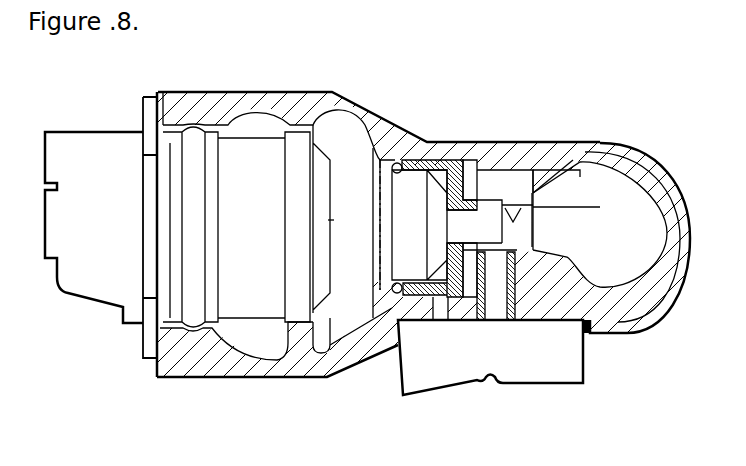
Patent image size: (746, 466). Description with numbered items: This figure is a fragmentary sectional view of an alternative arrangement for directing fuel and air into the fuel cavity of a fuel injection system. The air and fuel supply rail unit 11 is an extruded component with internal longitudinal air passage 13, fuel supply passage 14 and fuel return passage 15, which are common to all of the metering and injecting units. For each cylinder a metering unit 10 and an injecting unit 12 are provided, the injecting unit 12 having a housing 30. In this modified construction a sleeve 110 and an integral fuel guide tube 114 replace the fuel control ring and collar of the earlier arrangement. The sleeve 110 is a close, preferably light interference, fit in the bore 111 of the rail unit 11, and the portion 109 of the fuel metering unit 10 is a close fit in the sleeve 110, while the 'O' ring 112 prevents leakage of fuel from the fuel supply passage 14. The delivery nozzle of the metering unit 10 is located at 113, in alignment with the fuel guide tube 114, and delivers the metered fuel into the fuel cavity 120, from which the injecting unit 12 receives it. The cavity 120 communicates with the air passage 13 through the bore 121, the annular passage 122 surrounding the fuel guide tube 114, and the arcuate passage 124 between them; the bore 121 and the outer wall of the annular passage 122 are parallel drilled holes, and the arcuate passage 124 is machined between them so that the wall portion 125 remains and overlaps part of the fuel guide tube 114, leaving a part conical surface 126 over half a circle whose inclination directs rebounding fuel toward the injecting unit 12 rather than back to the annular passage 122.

The metering unit 10 is at (97, 310).
The air and fuel supply rail unit 11 is at (272, 381).
The injecting unit 12 is at (397, 353).
The air passage 13 is at (602, 222).
The fuel supply passage 14 is at (328, 326).
The fuel return passage 15 is at (247, 325).
The housing 30 is at (589, 369).
The portion of the fuel metering unit 109 is at (414, 190).
The sleeve 110 is at (468, 162).
The bore 111 is at (444, 142).
The 'O' ring 112 is at (396, 160).
The delivery nozzle 113 is at (457, 222).
The fuel guide tube 114 is at (508, 208).
The fuel cavity 120 is at (520, 257).
The bore 121 is at (537, 185).
The annular passage 122 is at (490, 258).
The arcuate passage 124 is at (503, 188).
The wall portion 125 is at (538, 172).
The part conical surface 126 is at (483, 252).